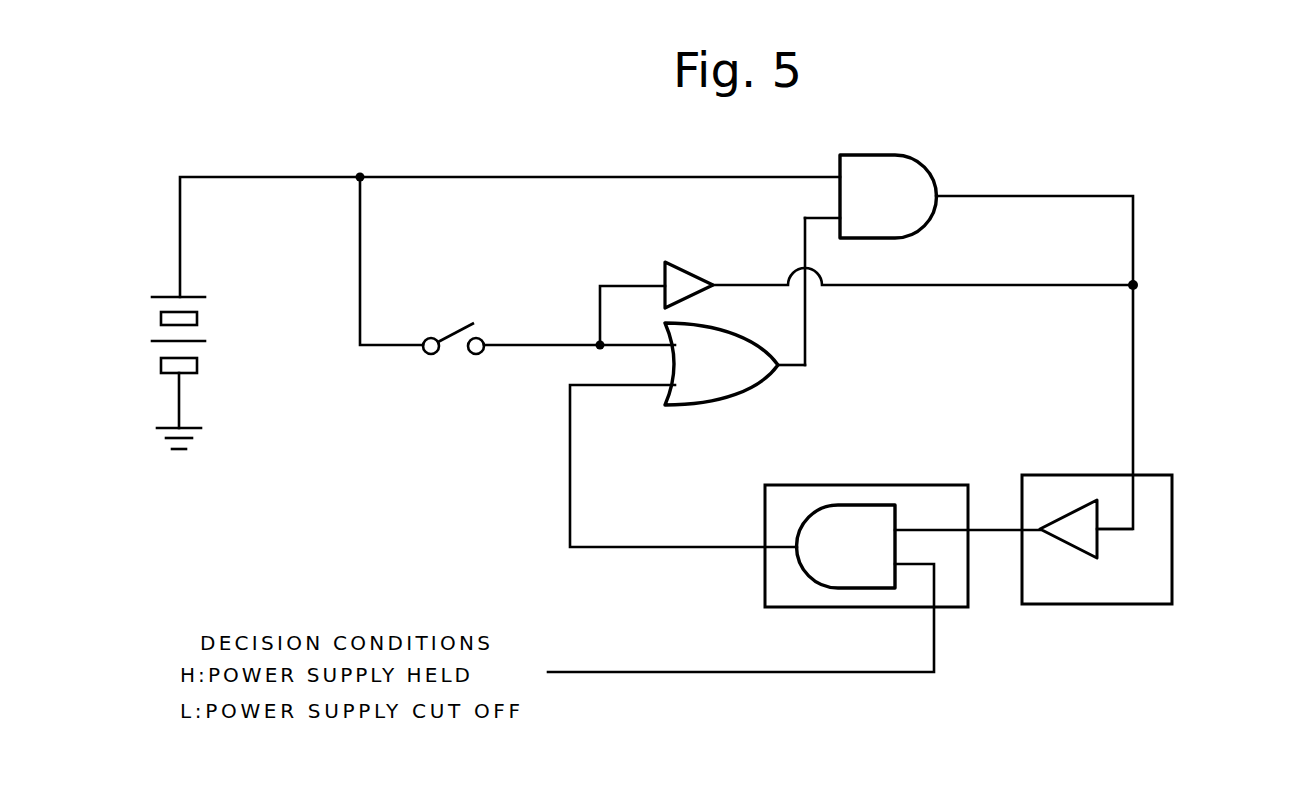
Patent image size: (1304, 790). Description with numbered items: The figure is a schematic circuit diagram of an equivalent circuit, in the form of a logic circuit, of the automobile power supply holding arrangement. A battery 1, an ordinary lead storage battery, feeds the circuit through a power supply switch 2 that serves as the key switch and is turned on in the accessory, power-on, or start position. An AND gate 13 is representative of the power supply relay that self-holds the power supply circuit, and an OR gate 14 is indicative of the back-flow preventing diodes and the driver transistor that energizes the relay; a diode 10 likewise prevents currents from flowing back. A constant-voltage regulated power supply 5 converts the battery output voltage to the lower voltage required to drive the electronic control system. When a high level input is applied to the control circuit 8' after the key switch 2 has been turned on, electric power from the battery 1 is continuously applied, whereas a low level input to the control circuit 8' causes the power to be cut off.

The battery 1 is at (215, 337).
The power supply switch 2 is at (450, 330).
The diode 10 is at (692, 270).
The AND gate 13 is at (928, 152).
The OR gate 14 is at (704, 409).
The control circuit 8' is at (914, 493).
The constant-voltage regulated power supply 5 is at (1150, 606).